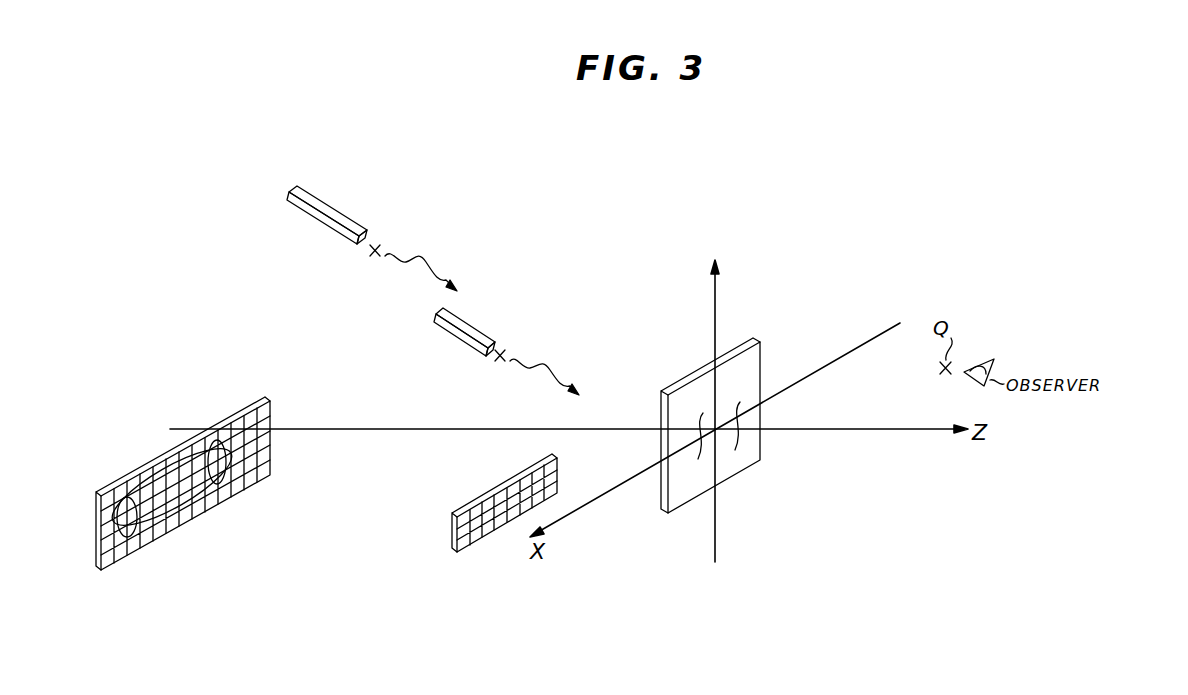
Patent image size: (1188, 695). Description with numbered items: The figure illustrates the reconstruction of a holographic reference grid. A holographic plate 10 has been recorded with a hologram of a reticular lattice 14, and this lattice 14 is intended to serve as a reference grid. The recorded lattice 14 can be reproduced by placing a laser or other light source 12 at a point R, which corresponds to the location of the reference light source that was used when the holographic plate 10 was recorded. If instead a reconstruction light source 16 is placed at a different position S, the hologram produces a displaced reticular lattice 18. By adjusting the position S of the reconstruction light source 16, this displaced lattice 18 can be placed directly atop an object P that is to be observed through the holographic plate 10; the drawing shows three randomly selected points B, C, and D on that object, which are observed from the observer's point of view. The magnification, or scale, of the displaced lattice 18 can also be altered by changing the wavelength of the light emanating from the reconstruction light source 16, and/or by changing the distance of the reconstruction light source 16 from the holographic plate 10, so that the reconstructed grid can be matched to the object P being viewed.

The holographic plate 10 is at (757, 339).
The light source 12 is at (458, 339).
The reticular lattice 14 is at (488, 538).
The reconstruction light source 16 is at (344, 184).
The displaced reticular lattice 18 is at (264, 478).
The position of the reconstruction light source S is at (387, 247).
The point corresponding to the reference light source R is at (506, 353).
The point on the object B is at (122, 494).
The point on the object C is at (176, 474).
The point on the object D is at (220, 447).
The object P is at (182, 512).